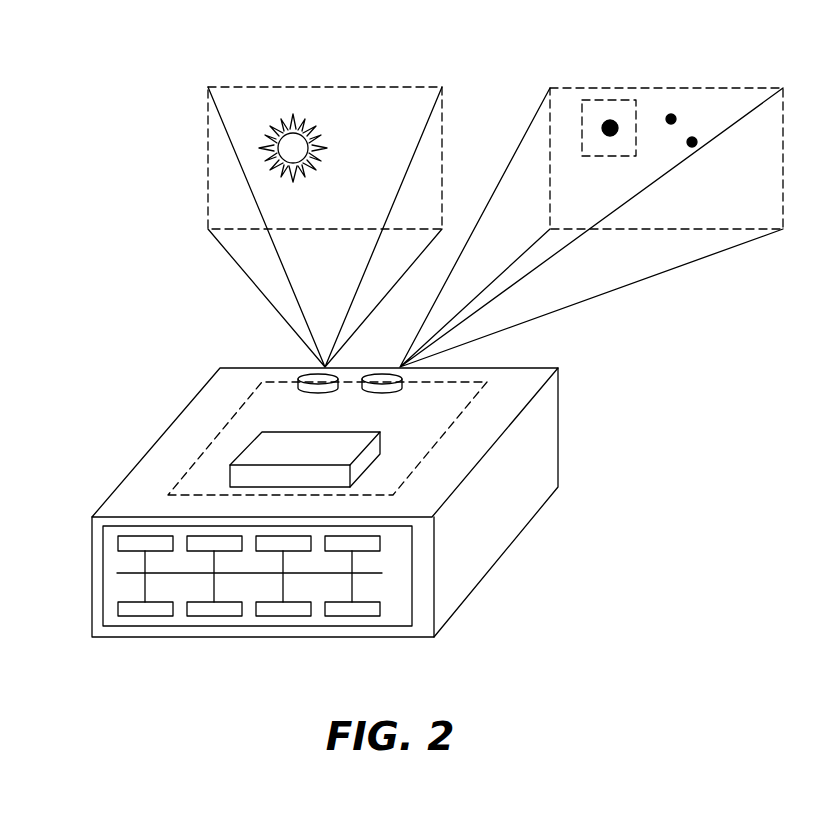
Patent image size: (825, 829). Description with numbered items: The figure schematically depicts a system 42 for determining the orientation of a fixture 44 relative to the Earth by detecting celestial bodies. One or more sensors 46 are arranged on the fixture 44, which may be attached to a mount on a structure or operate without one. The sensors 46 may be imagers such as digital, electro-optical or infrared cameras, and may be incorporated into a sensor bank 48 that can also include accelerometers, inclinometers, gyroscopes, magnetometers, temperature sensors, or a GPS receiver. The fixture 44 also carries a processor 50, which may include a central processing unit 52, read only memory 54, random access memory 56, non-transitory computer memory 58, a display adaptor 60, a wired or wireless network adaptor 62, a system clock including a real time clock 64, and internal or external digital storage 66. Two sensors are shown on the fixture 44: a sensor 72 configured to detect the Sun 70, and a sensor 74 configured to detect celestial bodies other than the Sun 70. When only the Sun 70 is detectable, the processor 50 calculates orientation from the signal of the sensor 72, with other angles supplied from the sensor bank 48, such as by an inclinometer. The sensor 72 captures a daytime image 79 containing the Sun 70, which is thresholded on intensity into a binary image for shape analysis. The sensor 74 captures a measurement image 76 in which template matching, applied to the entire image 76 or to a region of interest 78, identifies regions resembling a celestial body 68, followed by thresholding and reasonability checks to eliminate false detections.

The system 42 is at (120, 148).
The fixture 44 is at (513, 538).
The sensors 46 is at (410, 472).
The sensor bank 48 is at (373, 442).
The processor 50 is at (388, 626).
The central processing unit (CPU) 52 is at (118, 540).
The read only memory (ROM) 54 is at (187, 551).
The random access memory (RAM) 56 is at (257, 551).
The non-transitory computer memory 58 is at (118, 616).
The display adaptor 60 is at (187, 616).
The network adaptor 62 is at (326, 551).
The real time clock 64 is at (257, 616).
The digital storage 66 is at (326, 616).
The celestial body 68 is at (670, 124).
The Sun 70 is at (291, 182).
The sensor configured to detect the Sun 72 is at (310, 393).
The sensor configured to detect celestial bodies other than the Sun 74 is at (378, 393).
The measurement image 76 is at (560, 88).
The region of interest 78 is at (636, 118).
The captured daytime image 79 is at (352, 87).